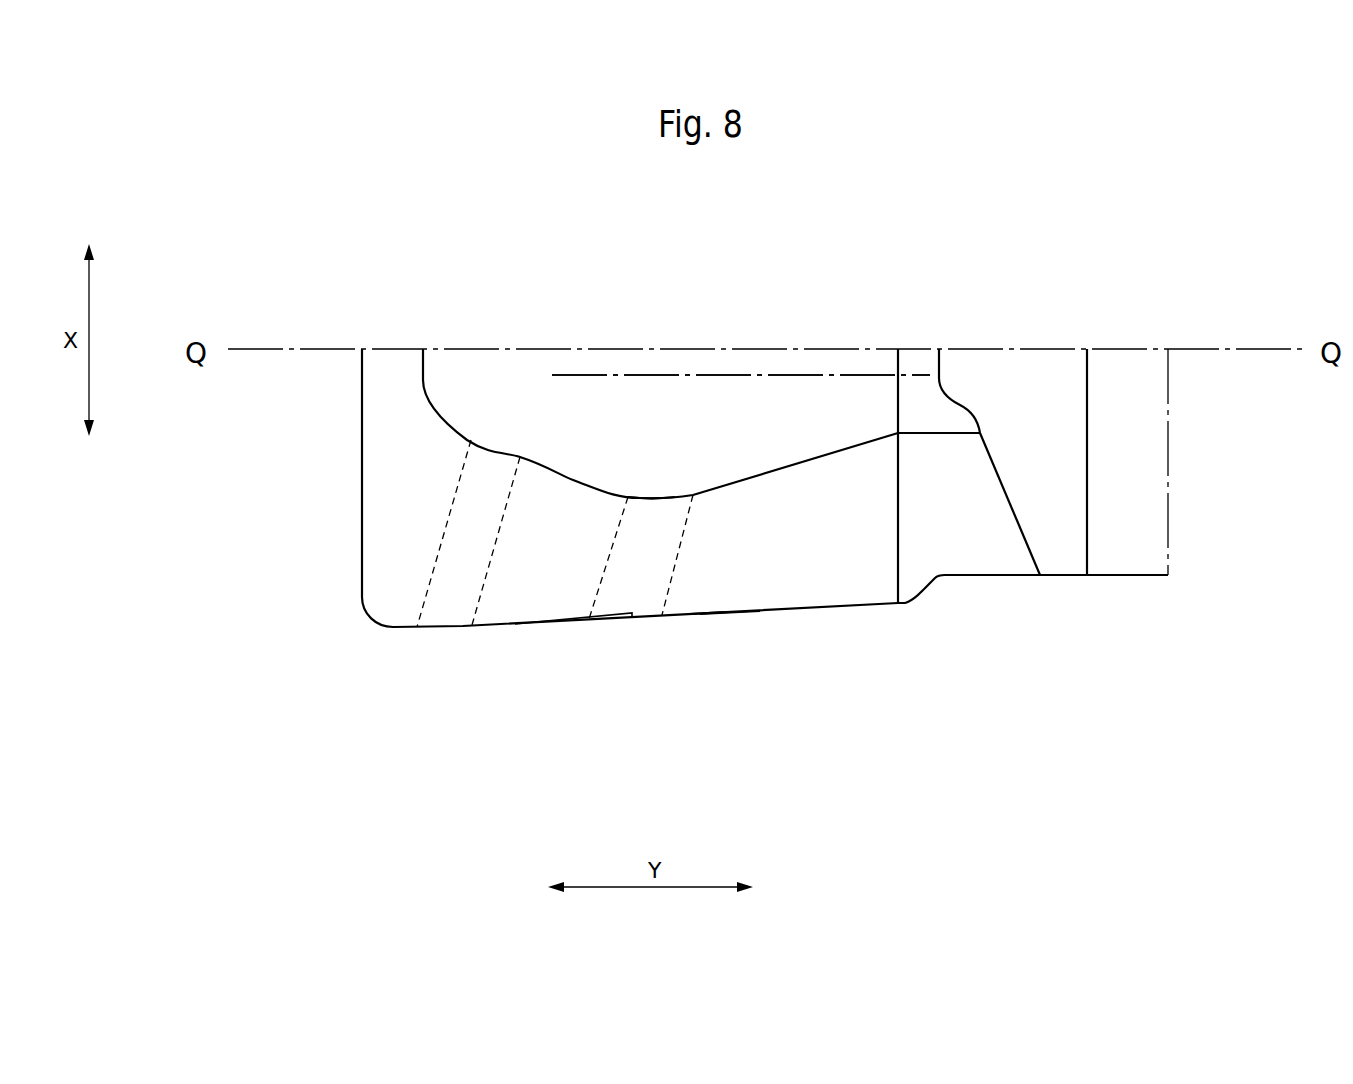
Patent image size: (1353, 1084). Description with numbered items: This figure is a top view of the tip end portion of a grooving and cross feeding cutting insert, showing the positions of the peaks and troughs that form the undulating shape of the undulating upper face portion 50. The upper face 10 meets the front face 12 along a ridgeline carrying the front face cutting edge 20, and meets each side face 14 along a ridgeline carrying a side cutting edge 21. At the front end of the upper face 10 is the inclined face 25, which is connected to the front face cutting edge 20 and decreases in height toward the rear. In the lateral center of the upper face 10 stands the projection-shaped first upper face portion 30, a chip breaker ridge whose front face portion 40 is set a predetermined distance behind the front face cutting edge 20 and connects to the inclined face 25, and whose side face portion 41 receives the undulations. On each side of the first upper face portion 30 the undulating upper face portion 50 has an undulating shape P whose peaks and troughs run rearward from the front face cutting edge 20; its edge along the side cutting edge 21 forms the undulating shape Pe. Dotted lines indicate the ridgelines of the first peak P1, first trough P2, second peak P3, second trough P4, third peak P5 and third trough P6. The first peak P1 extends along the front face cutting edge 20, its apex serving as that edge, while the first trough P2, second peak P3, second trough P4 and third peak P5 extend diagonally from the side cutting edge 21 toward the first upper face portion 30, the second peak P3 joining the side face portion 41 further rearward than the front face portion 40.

The upper face 10 is at (808, 568).
The front face 12 is at (362, 471).
The side face 14 is at (725, 613).
The front face cutting edge 20 is at (362, 564).
The side cutting edge 21 is at (717, 610).
The inclined face 25 is at (374, 437).
The first upper face portion 30 is at (724, 382).
The front face portion 40 is at (439, 370).
The side face portion 41 is at (648, 480).
The undulating upper face portion 50 is at (538, 607).
The undulating shape P is at (445, 603).
The first peak P1 is at (362, 533).
The first trough P2 is at (421, 622).
The second peak P3 is at (493, 600).
The second trough P4 is at (613, 610).
The third peak P5 is at (672, 602).
The third trough P6 is at (898, 568).
The undulating shape of the side cutting edge Pe is at (533, 622).